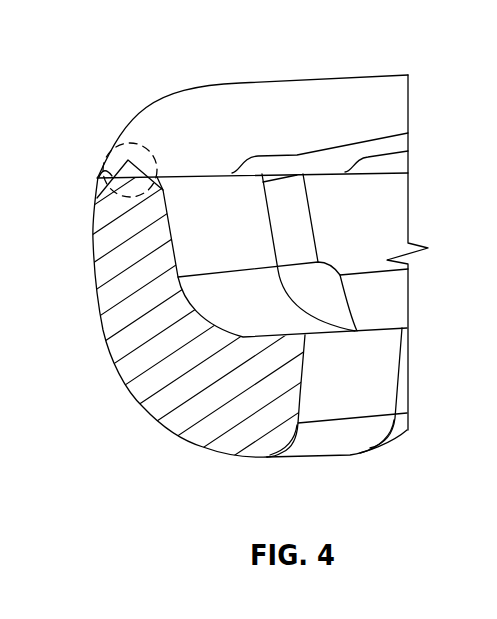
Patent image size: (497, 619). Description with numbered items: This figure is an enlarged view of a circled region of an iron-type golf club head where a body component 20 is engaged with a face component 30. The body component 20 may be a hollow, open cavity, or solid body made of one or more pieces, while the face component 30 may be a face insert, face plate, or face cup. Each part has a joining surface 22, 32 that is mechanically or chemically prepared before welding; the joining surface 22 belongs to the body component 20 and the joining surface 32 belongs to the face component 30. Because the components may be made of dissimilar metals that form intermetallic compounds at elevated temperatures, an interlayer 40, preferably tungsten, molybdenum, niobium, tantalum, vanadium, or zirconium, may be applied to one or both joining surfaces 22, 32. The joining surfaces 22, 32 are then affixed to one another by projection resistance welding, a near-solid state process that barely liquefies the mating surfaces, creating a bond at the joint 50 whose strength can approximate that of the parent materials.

The body component 20 is at (137, 380).
The joining surface 22 is at (103, 170).
The face component 30 is at (192, 102).
The joining surface 32 is at (162, 192).
The interlayer 40 is at (118, 177).
The joint 50 is at (130, 143).